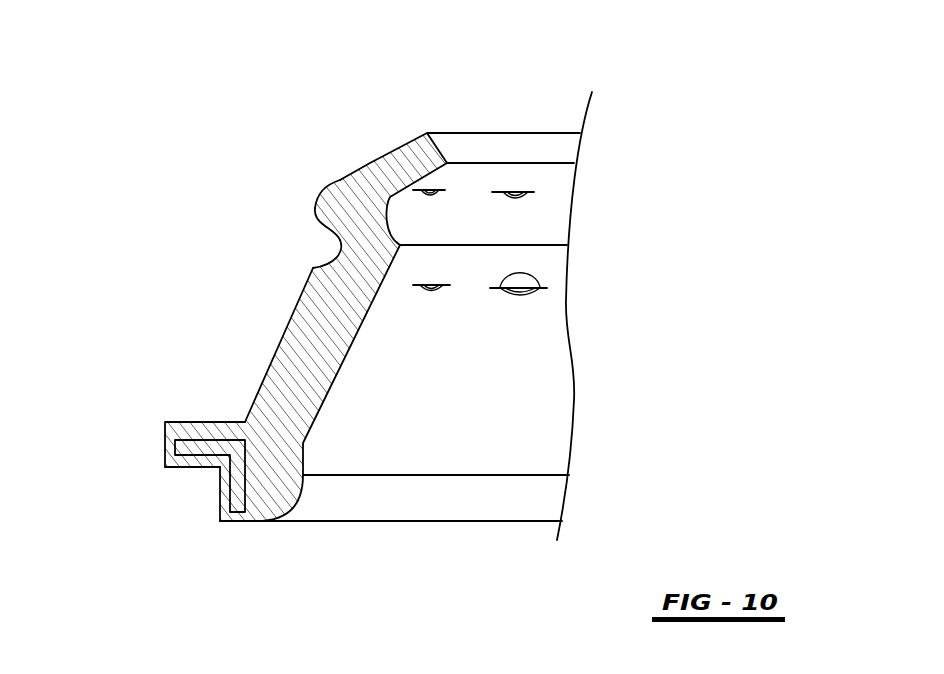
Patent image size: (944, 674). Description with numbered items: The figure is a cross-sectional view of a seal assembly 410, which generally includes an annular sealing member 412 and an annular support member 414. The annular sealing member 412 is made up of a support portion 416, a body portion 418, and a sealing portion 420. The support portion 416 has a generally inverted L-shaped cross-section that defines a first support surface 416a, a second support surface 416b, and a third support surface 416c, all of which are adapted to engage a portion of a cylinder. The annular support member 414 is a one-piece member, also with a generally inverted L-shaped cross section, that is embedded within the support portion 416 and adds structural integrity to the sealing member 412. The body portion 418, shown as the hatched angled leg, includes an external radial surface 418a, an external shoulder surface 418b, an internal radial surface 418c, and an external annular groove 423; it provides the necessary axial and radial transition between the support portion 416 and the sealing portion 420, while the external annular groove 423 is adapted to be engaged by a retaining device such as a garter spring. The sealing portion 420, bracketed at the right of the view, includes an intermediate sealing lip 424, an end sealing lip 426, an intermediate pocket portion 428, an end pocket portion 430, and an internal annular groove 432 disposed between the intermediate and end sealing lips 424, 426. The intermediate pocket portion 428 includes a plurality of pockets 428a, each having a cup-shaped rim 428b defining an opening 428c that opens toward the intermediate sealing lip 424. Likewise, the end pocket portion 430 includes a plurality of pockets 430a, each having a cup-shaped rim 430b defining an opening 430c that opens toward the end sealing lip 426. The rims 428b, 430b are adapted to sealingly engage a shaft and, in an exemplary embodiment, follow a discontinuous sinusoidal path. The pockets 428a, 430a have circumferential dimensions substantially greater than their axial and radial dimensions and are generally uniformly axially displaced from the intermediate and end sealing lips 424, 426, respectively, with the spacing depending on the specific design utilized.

The seal assembly 410 is at (225, 101).
The annular sealing member 412 is at (279, 312).
The annular support member 414 is at (157, 435).
The support portion 416 is at (212, 418).
The first support surface 416a is at (238, 523).
The second support surface 416b is at (218, 493).
The third support surface 416c is at (178, 467).
The body portion 418 is at (323, 290).
The external radial surface 418a is at (268, 362).
The external shoulder surface 418b is at (313, 207).
The internal radial surface 418c is at (320, 413).
The sealing portion 420 is at (800, 117).
The external annular groove 423 is at (342, 247).
The intermediate sealing lip 424 is at (527, 250).
The end sealing lip 426 is at (448, 157).
The intermediate pocket portion 428 is at (549, 347).
The pocket 428a is at (452, 300).
The cup-shaped rim 428b is at (415, 287).
The opening 428c is at (432, 283).
The end pocket portion 430 is at (584, 198).
The pocket 430a is at (557, 182).
The cup-shaped rim 430b is at (415, 192).
The opening 430c is at (438, 187).
The internal annular groove 432 is at (372, 167).